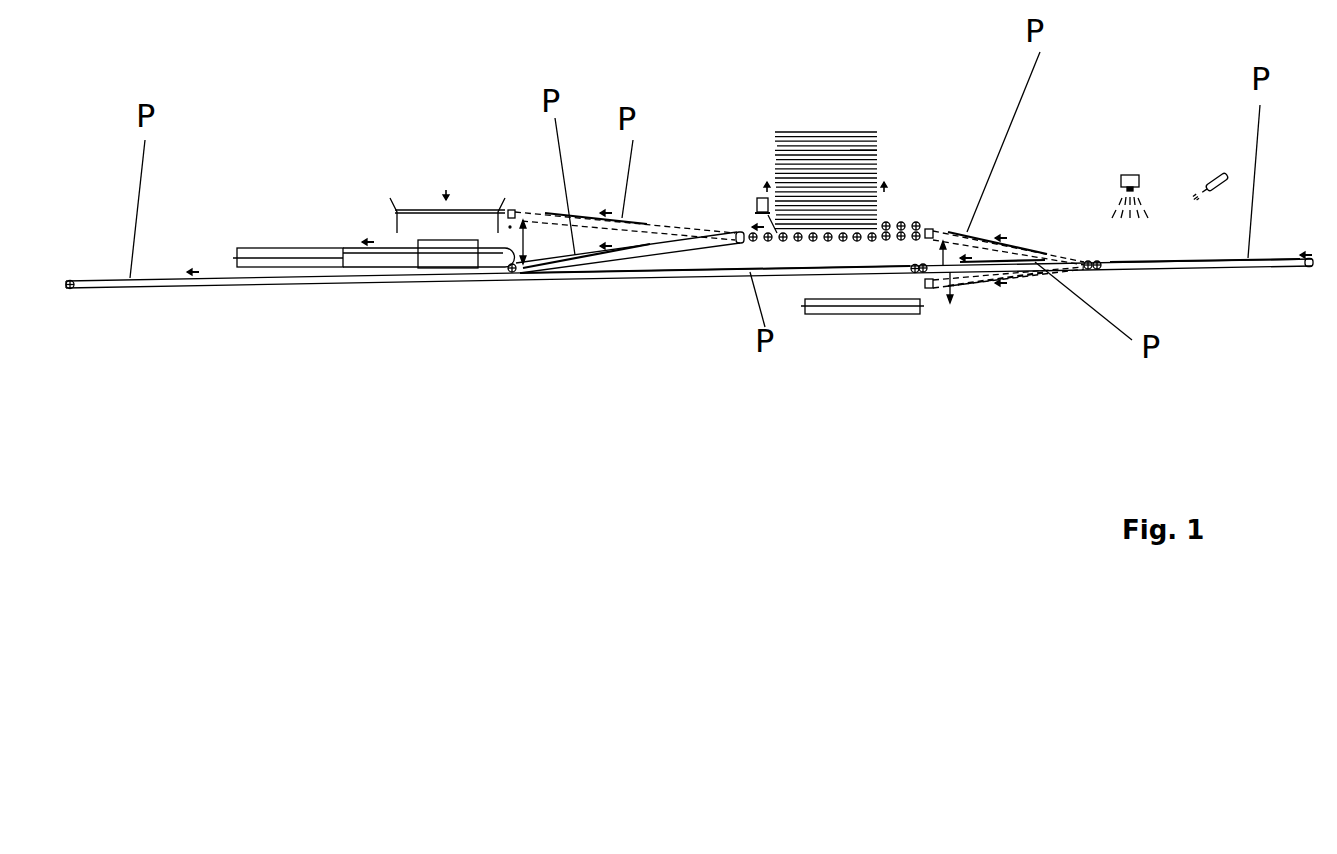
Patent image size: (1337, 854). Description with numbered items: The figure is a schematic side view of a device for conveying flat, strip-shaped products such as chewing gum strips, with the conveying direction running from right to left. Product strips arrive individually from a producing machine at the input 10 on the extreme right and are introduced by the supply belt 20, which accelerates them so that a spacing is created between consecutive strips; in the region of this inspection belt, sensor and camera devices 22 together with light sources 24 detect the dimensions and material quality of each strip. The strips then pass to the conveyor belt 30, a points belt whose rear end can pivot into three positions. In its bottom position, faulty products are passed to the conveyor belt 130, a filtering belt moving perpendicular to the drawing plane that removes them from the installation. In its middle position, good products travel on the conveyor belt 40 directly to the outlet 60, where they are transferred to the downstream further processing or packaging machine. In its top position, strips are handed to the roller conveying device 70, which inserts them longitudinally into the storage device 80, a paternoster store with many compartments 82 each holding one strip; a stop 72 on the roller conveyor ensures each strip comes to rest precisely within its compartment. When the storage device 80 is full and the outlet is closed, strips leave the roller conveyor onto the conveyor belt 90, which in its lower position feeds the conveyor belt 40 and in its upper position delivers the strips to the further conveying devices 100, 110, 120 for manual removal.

The input 10 is at (1295, 259).
The supply belt 20 is at (1205, 326).
The sensor and camera devices 22 is at (1218, 170).
The light sources 24 is at (1130, 174).
The conveyor belt 30 is at (1013, 312).
The conveyor belt 40 is at (723, 333).
The outlet 60 is at (82, 289).
The roller conveying device 70 is at (920, 181).
The stop 72 is at (717, 140).
The storage device 80 is at (800, 182).
The compartments 82 is at (863, 165).
The conveyor belt 90 is at (650, 305).
The further conveying device 100 is at (445, 322).
The further conveying device 110 is at (418, 180).
The further conveying device 120 is at (301, 328).
The conveyor belt 130 is at (879, 348).